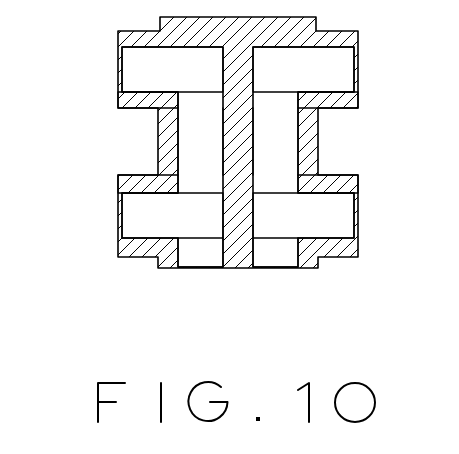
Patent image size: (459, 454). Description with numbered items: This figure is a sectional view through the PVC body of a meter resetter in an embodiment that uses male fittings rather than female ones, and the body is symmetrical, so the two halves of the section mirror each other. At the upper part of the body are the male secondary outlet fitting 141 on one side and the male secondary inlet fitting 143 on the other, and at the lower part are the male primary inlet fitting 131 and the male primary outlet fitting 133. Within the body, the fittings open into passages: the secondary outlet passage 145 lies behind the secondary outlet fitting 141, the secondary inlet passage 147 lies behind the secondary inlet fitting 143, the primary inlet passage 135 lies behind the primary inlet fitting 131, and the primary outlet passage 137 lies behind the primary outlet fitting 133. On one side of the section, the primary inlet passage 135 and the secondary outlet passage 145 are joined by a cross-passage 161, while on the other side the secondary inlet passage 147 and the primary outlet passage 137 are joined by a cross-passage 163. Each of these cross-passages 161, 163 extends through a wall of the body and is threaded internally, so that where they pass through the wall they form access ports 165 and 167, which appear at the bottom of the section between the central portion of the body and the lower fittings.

The male secondary outlet fitting 141 is at (133, 92).
The male secondary inlet fitting 143 is at (343, 92).
The secondary outlet passage 145 is at (183, 82).
The secondary inlet passage 147 is at (338, 79).
The cross-passage 161 is at (215, 154).
The cross-passage 163 is at (292, 154).
The male primary inlet fitting 131 is at (133, 238).
The male primary outlet fitting 133 is at (343, 238).
The primary inlet passage 135 is at (180, 226).
The primary outlet passage 137 is at (340, 226).
The access port 165 is at (178, 257).
The access port 167 is at (298, 257).